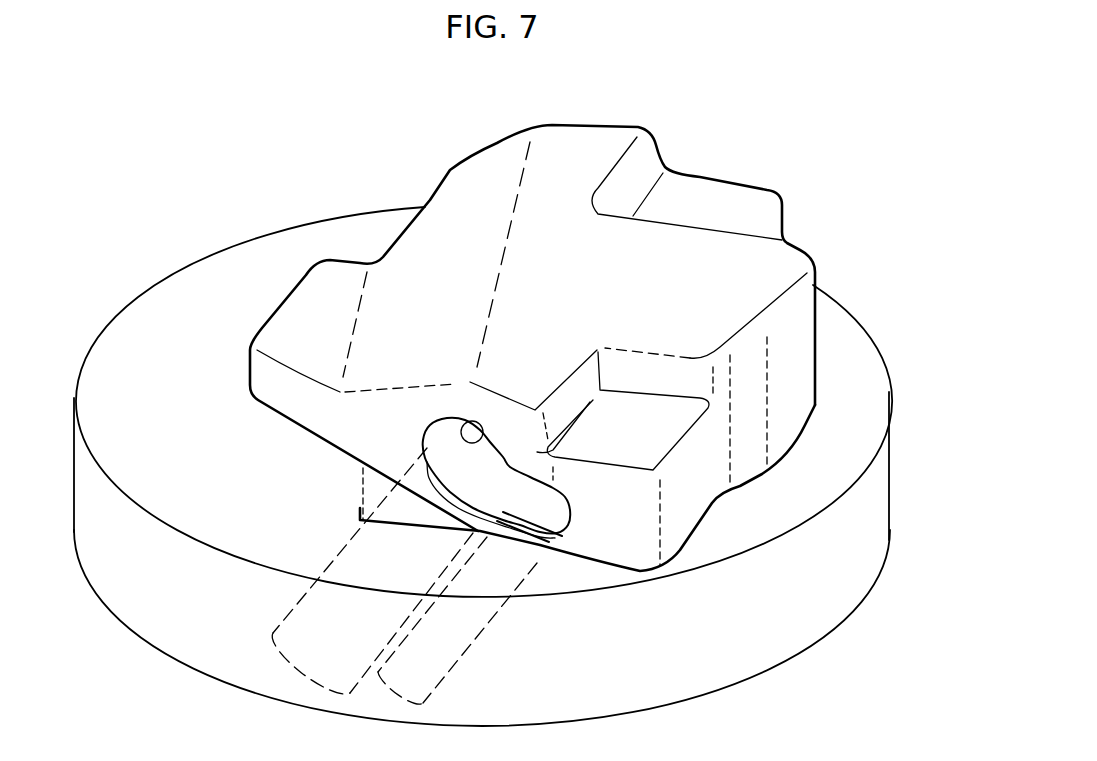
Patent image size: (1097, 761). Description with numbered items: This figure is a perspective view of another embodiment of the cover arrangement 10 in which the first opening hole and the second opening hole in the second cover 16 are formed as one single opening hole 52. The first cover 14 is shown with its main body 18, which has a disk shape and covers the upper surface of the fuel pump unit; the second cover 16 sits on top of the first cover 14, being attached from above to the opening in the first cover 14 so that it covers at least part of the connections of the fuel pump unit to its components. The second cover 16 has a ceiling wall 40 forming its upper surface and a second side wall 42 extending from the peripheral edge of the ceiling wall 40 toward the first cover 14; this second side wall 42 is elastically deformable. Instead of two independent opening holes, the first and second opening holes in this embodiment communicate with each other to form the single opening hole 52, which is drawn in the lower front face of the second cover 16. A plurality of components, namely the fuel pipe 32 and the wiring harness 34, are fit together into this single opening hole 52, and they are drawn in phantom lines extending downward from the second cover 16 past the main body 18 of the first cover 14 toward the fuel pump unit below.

The fixture assembly 10 is at (738, 63).
The first cover 14 is at (529, 315).
The second cover 16 is at (763, 170).
The main body 18 is at (770, 602).
The fuel pipe 32 is at (340, 547).
The wiring harness 34 is at (477, 637).
The ceiling wall 40 is at (568, 263).
The second side wall 42 is at (297, 439).
The single opening hole 52 is at (465, 425).